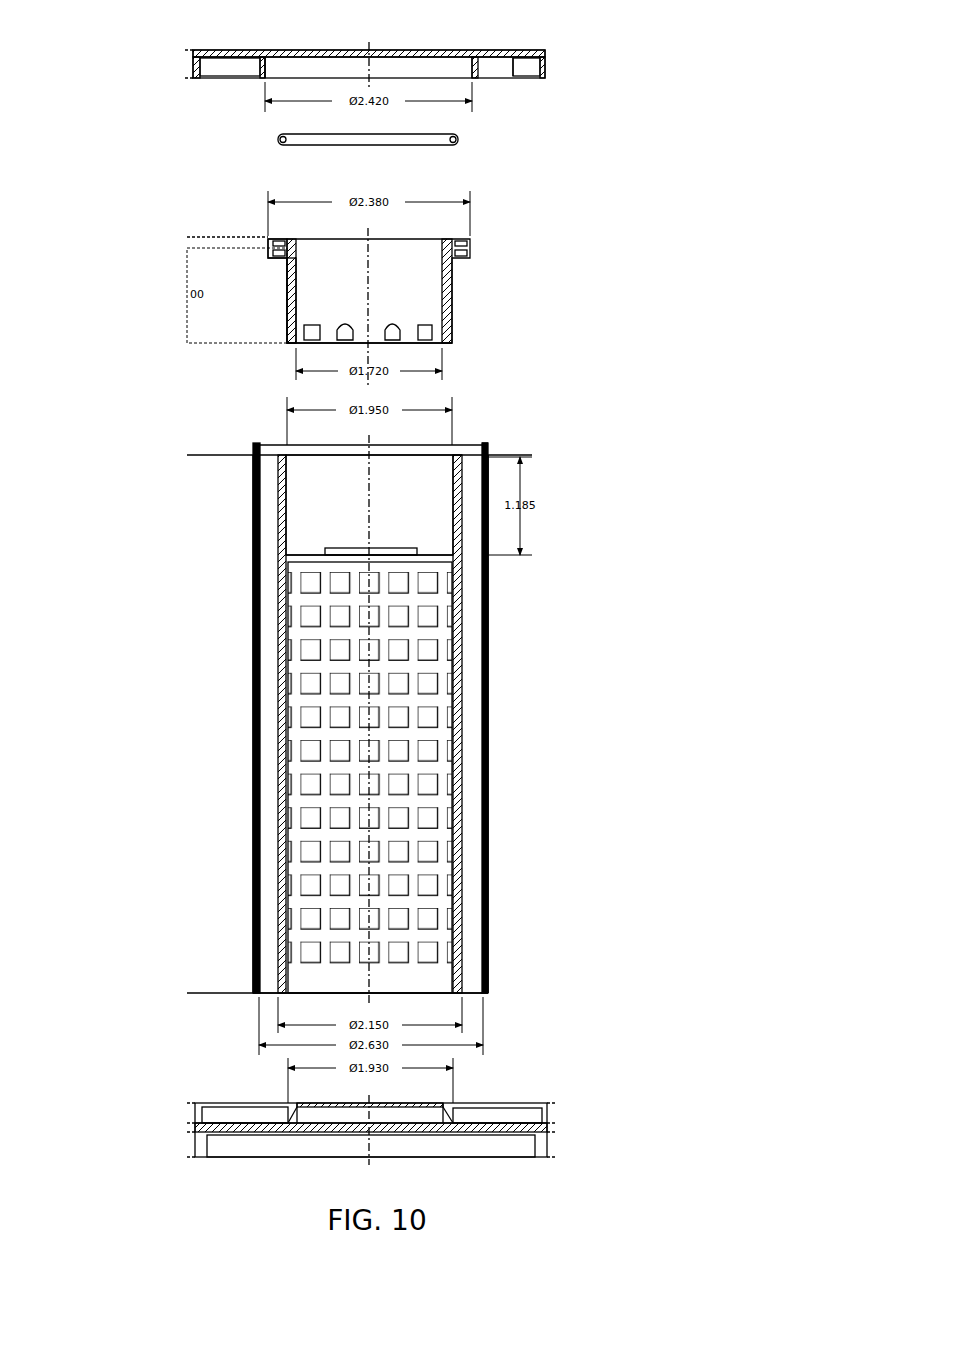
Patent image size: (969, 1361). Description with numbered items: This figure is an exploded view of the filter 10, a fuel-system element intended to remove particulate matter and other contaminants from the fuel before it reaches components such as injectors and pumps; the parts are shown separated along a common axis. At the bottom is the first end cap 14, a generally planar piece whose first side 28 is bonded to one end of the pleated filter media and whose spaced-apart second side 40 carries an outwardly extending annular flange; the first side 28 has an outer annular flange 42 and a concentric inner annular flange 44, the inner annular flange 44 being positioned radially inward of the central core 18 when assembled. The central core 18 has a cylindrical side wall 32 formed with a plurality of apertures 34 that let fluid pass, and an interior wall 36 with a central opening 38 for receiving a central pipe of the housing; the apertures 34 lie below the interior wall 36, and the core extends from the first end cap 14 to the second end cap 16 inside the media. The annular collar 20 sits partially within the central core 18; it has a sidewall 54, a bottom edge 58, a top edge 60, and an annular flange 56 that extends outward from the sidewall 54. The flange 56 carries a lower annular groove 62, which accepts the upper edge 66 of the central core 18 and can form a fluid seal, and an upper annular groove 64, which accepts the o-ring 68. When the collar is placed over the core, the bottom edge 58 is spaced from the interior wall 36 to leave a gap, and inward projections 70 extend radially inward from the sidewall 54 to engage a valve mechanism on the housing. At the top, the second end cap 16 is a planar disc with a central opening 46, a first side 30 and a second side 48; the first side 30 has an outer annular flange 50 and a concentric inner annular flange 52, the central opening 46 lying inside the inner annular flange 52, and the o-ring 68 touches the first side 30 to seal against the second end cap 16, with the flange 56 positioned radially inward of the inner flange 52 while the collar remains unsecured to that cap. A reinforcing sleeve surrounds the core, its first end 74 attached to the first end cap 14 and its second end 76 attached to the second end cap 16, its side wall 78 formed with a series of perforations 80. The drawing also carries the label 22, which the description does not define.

The filter 10 is at (640, 532).
The first end cap 14 is at (578, 1120).
The second end cap 16 is at (585, 63).
The central core 18 is at (457, 623).
The annular collar 20 is at (447, 316).
The outer sleeve 22 is at (488, 652).
The first side 28 is at (505, 1120).
The first side 30 is at (513, 62).
The cylindrical side wall 32 is at (458, 932).
The apertures 34 is at (400, 853).
The interior wall 36 is at (430, 554).
The central opening 38 is at (345, 540).
The second side 40 is at (260, 1133).
The outer annular flange 42 is at (545, 1116).
The inner annular flange 44 is at (488, 1112).
The central opening 46 is at (420, 46).
The second side 48 is at (245, 50).
The outer annular flange 50 is at (543, 62).
The inner annular flange 52 is at (262, 68).
The sidewall 54 is at (290, 310).
The annular flange 56 is at (270, 247).
The bottom edge 58 is at (447, 345).
The top edge 60 is at (293, 238).
The lower annular groove 62 is at (280, 257).
The upper annular groove 64 is at (455, 240).
The upper edge 66 is at (457, 455).
The o-ring 68 is at (458, 137).
The inward projections 70 is at (350, 322).
The first end 74 is at (487, 993).
The second end 76 is at (482, 447).
The side wall 78 is at (488, 702).
The perforations 80 is at (252, 698).